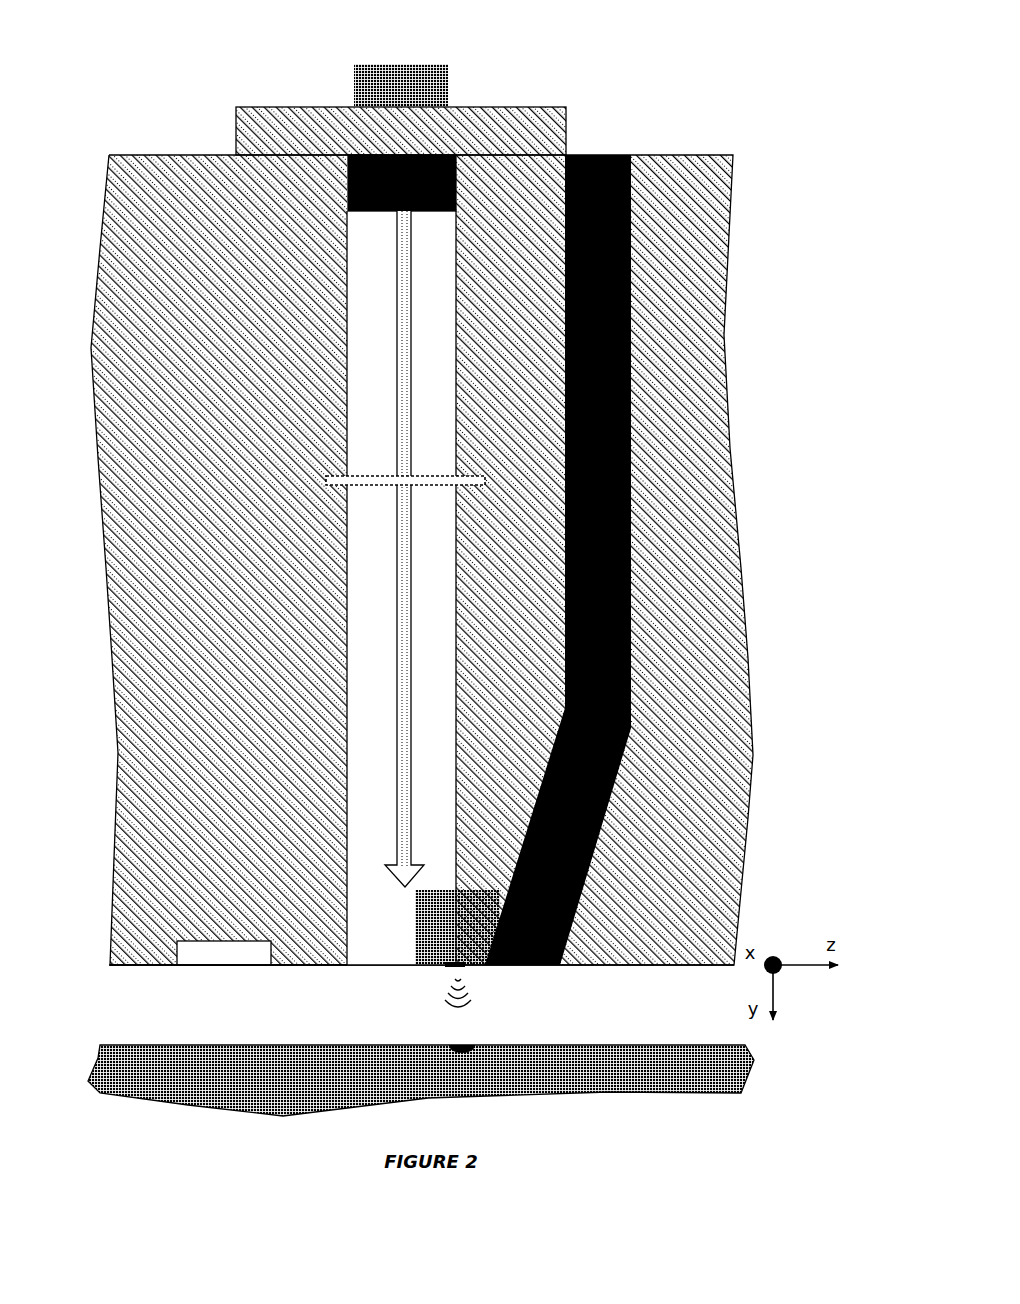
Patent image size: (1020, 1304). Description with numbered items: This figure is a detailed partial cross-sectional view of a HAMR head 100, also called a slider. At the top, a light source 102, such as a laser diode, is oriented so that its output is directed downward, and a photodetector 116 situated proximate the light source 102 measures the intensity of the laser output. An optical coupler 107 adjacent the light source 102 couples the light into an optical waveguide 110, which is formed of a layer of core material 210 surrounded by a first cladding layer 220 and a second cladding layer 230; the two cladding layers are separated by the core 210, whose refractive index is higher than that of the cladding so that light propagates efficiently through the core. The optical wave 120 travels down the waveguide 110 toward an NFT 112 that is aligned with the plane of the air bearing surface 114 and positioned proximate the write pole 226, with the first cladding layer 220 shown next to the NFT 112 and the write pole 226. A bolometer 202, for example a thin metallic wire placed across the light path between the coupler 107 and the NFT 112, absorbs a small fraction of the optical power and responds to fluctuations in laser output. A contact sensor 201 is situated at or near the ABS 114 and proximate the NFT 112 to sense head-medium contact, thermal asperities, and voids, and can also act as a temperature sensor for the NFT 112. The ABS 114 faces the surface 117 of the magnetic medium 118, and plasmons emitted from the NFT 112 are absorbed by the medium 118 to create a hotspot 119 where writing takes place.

The HAMR head 100 is at (709, 115).
The light source 102 is at (245, 99).
The optical coupler 107 is at (402, 183).
The optical waveguide 110 is at (390, 560).
The NFT 112 is at (426, 947).
The air bearing surface 114 is at (104, 958).
The photodetector 116 is at (396, 56).
The surface of magnetic medium 117 is at (680, 1037).
The magnetic medium 118 is at (688, 1073).
The hotspot 119 is at (450, 1043).
The optical wave 120 is at (395, 670).
The contact sensor 201 is at (214, 933).
The bolometer 202 is at (322, 468).
The core layer 210 is at (411, 684).
The first cladding layer 220 is at (604, 560).
The write pole 226 is at (558, 560).
The second cladding layer 230 is at (219, 560).